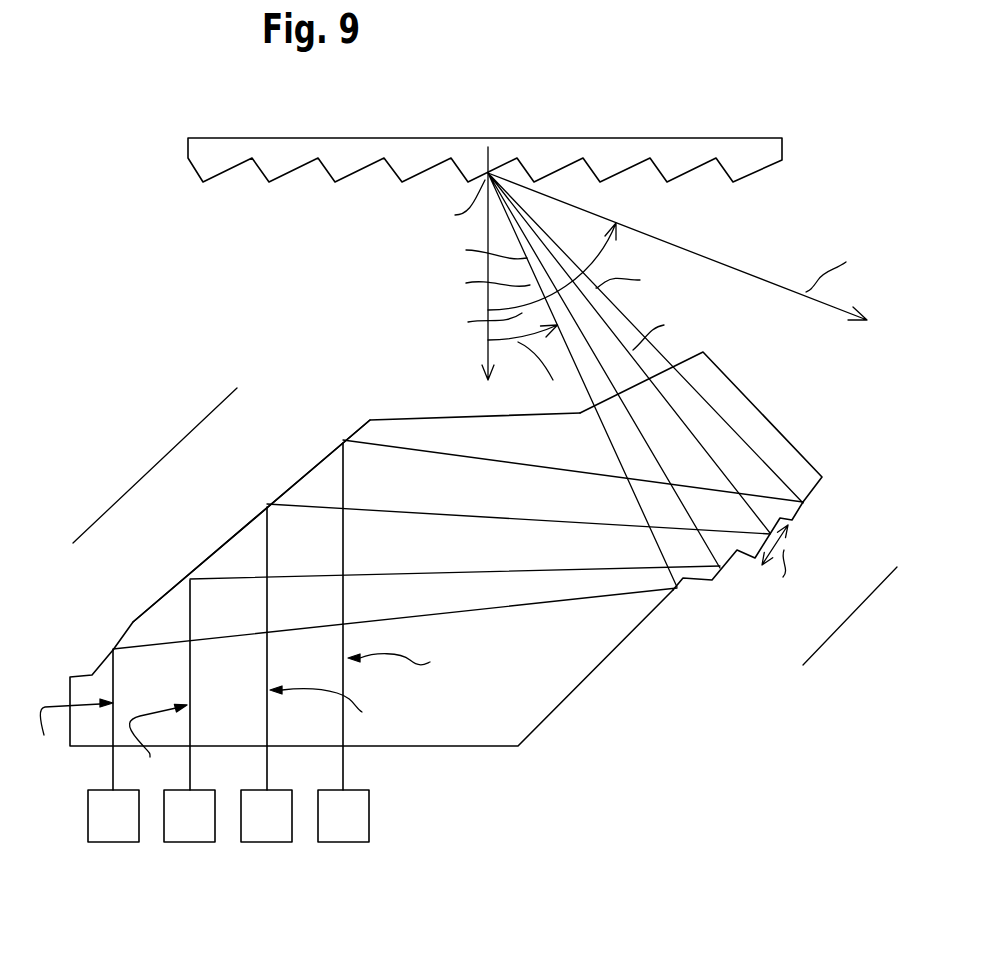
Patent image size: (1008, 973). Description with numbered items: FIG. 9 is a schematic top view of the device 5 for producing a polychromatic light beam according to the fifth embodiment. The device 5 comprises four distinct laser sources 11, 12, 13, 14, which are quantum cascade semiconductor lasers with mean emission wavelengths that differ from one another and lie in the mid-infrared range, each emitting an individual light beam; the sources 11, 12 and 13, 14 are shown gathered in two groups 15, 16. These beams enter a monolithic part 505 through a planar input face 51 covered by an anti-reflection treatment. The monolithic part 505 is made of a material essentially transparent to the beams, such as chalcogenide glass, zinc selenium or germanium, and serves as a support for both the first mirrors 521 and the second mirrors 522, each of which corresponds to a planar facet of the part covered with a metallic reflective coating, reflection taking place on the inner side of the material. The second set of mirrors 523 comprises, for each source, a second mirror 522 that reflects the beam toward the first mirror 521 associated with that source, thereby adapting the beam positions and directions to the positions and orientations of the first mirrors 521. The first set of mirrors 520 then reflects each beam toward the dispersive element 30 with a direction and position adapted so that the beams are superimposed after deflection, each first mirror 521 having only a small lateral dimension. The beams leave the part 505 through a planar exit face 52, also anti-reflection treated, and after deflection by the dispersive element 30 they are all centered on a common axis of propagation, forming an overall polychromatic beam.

The device for producing a polychromatic light beam 5 is at (168, 262).
The dispersive element 30 is at (681, 152).
The planar input face 51 is at (90, 750).
The planar exit face 52 is at (688, 349).
The monolithic part 505 is at (491, 758).
The first set of mirrors 520 is at (785, 582).
The first mirror 521 is at (815, 500).
The second mirror 522 is at (338, 445).
The second set of mirrors 523 is at (155, 459).
The laser source 11 is at (340, 822).
The laser source 12 is at (270, 826).
The laser source 13 is at (183, 830).
The laser source 14 is at (122, 823).
The first detector group 15 is at (305, 862).
The second detector group 16 is at (151, 862).